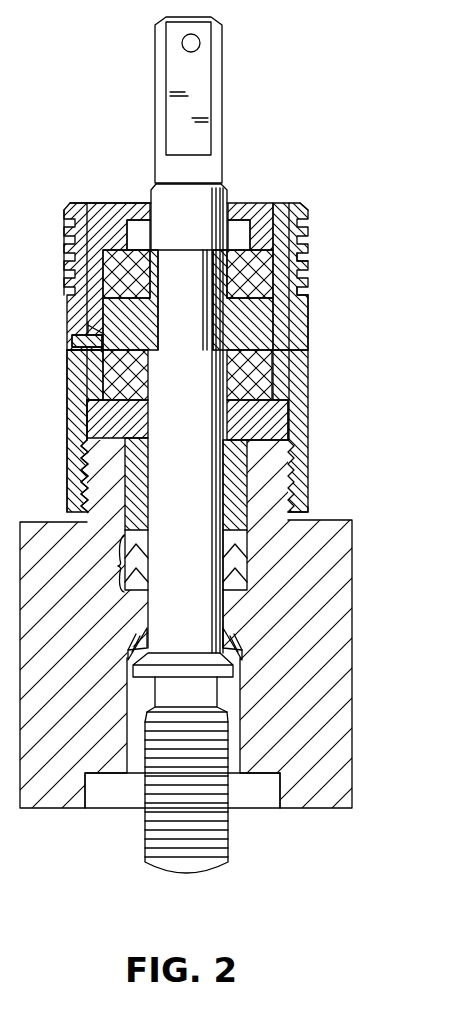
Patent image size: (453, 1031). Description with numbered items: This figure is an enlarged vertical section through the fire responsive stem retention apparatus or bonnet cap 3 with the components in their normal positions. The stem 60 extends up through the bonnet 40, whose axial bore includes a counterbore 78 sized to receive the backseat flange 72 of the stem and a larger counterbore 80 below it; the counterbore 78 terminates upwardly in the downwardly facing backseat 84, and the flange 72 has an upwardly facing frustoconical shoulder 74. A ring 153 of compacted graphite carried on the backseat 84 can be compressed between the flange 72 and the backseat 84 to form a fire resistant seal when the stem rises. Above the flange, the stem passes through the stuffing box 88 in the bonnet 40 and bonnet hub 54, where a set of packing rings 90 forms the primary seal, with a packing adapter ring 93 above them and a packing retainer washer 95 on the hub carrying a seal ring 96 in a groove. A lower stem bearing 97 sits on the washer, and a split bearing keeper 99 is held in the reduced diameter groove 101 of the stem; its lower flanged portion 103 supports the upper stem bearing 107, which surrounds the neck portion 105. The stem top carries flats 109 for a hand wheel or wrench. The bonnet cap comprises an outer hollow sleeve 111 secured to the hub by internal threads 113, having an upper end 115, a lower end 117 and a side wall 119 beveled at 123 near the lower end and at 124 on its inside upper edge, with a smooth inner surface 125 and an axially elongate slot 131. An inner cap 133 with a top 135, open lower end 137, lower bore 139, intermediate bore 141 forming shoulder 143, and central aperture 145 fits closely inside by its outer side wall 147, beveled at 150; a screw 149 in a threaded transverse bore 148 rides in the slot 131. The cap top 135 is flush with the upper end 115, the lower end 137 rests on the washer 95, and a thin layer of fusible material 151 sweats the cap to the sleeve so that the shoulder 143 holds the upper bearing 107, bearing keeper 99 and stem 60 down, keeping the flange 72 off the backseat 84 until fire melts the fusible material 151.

The fire responsive stem retention apparatus or bonnet cap 3 is at (333, 51).
The bonnet 40 is at (352, 560).
The bonnet hub 54 is at (292, 463).
The stem 60 is at (192, 536).
The backseat flange 72 is at (237, 701).
The frustoconical shoulder 74 is at (236, 661).
The counterbore 78 is at (237, 701).
The larger counterbore 80 is at (278, 782).
The backseat 84 is at (226, 633).
The stuffing box 88 is at (248, 565).
The packing rings 90 is at (120, 561).
The packing adapter ring 93 is at (238, 470).
The packing retainer washer 95 is at (300, 422).
The seal ring 96 is at (290, 418).
The lower stem bearing 97 is at (230, 403).
The split bearing keeper or bushing 99 is at (300, 292).
The reduced diameter portion or groove 101 is at (211, 318).
The lower flanged portion 103 is at (298, 265).
The neck portion 105 is at (245, 288).
The upper stem bearing 107 is at (130, 300).
The flats 109 is at (198, 76).
The outer hollow sleeve 111 is at (87, 402).
The threads 113 is at (82, 462).
The upper end 115 is at (68, 205).
The lower end 117 is at (290, 508).
The side wall 119 is at (70, 430).
The bevel 123 is at (68, 504).
The bevel 124 is at (283, 212).
The smooth inner surface 125 is at (92, 377).
The axially elongate slot 131 is at (67, 303).
The inner cap 133 is at (268, 230).
The closed upper end or top 135 is at (243, 200).
The open lower end 137 is at (117, 419).
The lower internal bore 139 is at (104, 382).
The intermediate reduced diameter bore 141 is at (152, 223).
The shoulder 143 is at (135, 250).
The central bore or aperture 145 is at (160, 180).
The outer cylindrical side wall 147 is at (290, 316).
The threaded transverse bore 148 is at (100, 330).
The screw 149 is at (72, 340).
The bevel 150 is at (293, 205).
The fusible material 151 is at (88, 200).
The ring of compacted graphite 153 is at (237, 645).